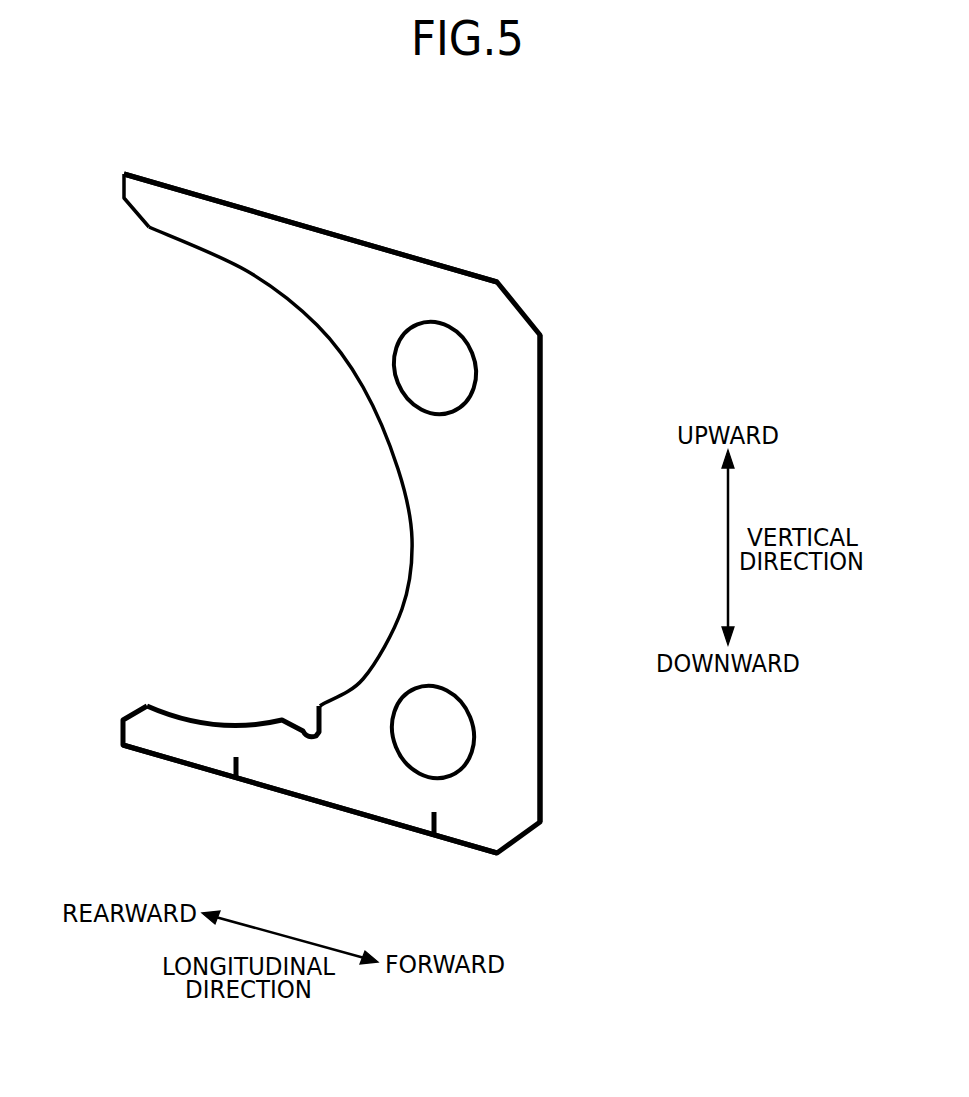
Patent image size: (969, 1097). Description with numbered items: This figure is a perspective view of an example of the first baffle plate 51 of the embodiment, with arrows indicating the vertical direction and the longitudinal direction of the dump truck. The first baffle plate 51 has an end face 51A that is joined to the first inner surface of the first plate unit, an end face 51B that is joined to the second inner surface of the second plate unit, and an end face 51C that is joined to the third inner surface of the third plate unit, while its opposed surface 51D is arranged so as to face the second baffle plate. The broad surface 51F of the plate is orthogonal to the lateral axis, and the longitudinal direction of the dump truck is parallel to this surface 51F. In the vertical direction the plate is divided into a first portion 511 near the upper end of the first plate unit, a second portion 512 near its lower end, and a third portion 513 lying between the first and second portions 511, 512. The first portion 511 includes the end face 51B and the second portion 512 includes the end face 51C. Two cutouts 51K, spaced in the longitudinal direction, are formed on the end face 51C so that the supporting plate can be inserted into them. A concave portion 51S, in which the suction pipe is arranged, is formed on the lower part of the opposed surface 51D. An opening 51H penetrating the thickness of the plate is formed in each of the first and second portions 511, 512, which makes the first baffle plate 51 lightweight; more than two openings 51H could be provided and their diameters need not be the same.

The first baffle plate 51 is at (507, 247).
The first end face 51A is at (539, 553).
The second end face 51B is at (250, 210).
The third end face 51C is at (300, 797).
The first opposed surface 51D is at (411, 541).
The surface orthogonal to the lateral axis 51F is at (438, 616).
The opening 51H is at (446, 329).
The cutout 51K is at (236, 780).
The concave portion 51S is at (313, 731).
The first portion 511 is at (559, 283).
The second portion 512 is at (559, 668).
The third portion 513 is at (559, 477).